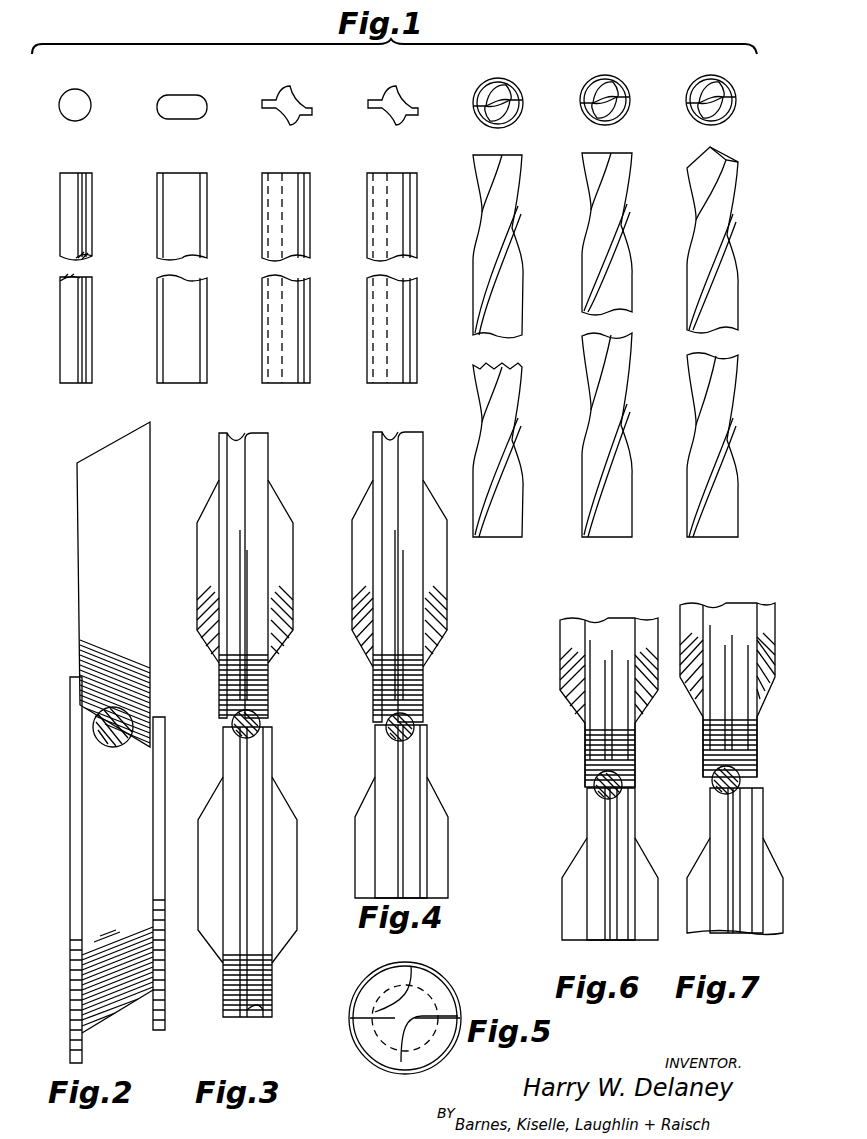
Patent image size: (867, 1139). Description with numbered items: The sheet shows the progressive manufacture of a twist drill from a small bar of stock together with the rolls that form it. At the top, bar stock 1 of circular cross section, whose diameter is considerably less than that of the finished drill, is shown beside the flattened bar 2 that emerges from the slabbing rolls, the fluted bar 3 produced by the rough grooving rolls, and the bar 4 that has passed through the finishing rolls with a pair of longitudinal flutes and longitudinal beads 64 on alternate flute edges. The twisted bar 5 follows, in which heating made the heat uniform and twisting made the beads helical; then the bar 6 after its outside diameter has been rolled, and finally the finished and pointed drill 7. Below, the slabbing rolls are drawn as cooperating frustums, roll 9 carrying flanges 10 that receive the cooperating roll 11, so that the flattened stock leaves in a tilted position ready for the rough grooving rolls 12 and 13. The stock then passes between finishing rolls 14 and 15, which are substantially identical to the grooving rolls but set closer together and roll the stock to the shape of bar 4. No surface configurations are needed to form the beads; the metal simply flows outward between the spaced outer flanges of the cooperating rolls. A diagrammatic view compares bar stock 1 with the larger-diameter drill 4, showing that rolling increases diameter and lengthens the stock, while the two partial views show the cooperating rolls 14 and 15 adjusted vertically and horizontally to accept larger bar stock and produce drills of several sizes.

In FIG. 1, the bar stock 1 is at (91, 103).
In FIG. 5, the bar stock 1 is at (412, 1074).
In FIG. 1, the bar after slabbing rolls 2 is at (207, 104).
In FIG. 1, the bar after rough grooving rolls 3 is at (300, 96).
In FIG. 3, the bar after rough grooving rolls 3 is at (268, 722).
In FIG. 1, the bar after finishing rolls 4 is at (404, 94).
In FIG. 4, the bar after finishing rolls 4 is at (425, 738).
In FIG. 5, the bar after finishing rolls 4 is at (385, 1068).
In FIG. 6, the bar after finishing rolls 4 is at (620, 790).
In FIG. 7, the bar after finishing rolls 4 is at (740, 790).
In FIG. 1, the twisted bar 5 is at (520, 92).
In FIG. 1, the bar after outside-diameter rolling 6 is at (627, 90).
In FIG. 1, the finished and pointed drill 7 is at (733, 90).
In FIG. 1, the longitudinal beads 64 is at (412, 110).
In FIG. 2, the slabbing roll 9 is at (92, 896).
In FIG. 2, the flanges 10 is at (70, 738).
In FIG. 2, the cooperating slabbing roll 11 is at (80, 568).
In FIG. 3, the rough grooving roll 12 is at (272, 790).
In FIG. 3, the rough grooving roll 13 is at (262, 570).
In FIG. 4, the finishing roll 14 is at (430, 795).
In FIG. 6, the finishing roll 14 is at (587, 836).
In FIG. 7, the finishing roll 14 is at (710, 836).
In FIG. 4, the finishing roll 15 is at (420, 592).
In FIG. 6, the finishing roll 15 is at (585, 746).
In FIG. 7, the finishing roll 15 is at (703, 746).